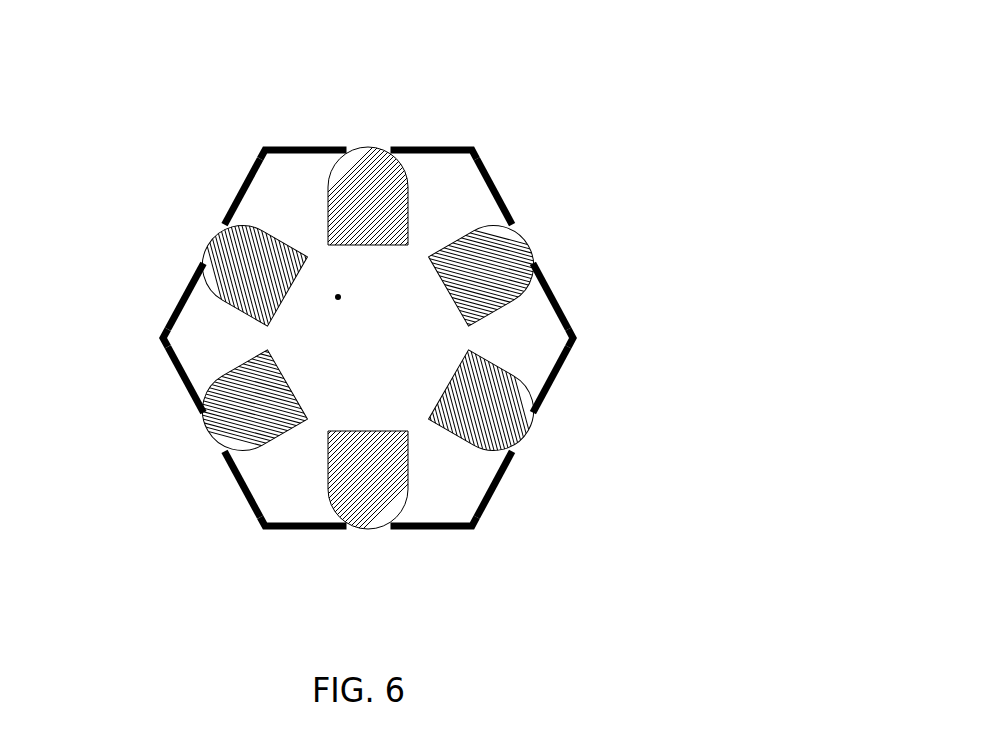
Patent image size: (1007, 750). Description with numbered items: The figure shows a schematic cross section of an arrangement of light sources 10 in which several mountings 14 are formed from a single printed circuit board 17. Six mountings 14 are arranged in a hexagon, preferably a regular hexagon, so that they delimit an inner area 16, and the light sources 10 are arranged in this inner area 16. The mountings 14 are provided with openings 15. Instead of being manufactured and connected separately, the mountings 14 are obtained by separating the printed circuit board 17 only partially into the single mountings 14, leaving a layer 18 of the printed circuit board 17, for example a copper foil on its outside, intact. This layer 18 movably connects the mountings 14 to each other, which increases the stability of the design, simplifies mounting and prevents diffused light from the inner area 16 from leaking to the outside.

The light source 10 is at (355, 185).
The mounting 14 is at (425, 147).
The opening 15 is at (368, 138).
The inner area 16 is at (338, 297).
The printed circuit board 17 is at (173, 283).
The layer 18 is at (473, 150).